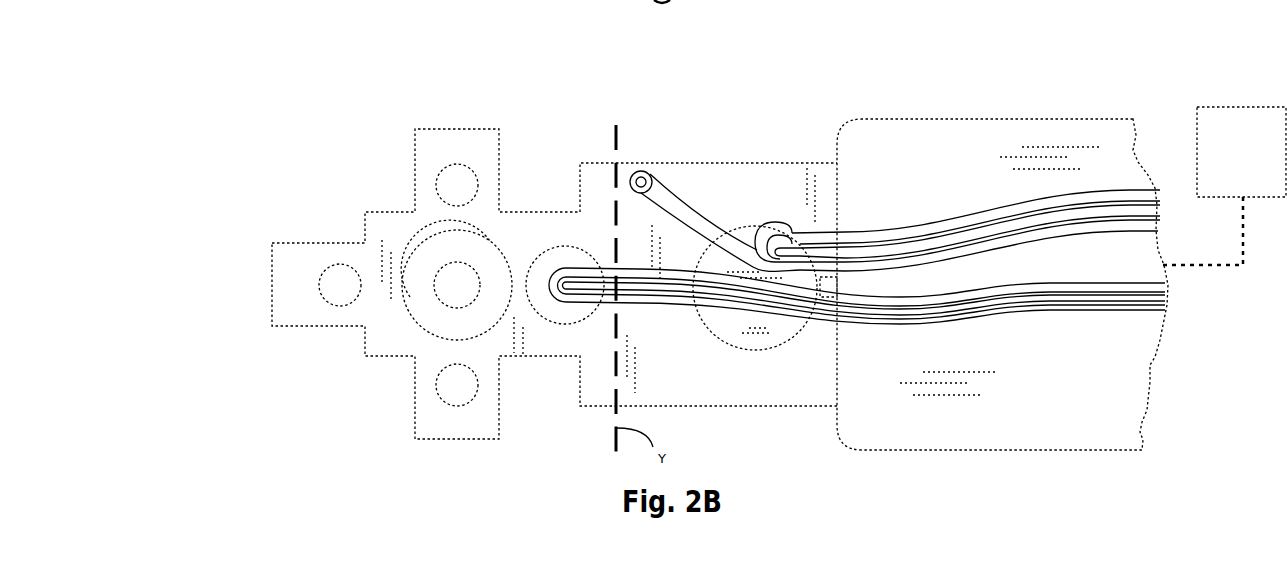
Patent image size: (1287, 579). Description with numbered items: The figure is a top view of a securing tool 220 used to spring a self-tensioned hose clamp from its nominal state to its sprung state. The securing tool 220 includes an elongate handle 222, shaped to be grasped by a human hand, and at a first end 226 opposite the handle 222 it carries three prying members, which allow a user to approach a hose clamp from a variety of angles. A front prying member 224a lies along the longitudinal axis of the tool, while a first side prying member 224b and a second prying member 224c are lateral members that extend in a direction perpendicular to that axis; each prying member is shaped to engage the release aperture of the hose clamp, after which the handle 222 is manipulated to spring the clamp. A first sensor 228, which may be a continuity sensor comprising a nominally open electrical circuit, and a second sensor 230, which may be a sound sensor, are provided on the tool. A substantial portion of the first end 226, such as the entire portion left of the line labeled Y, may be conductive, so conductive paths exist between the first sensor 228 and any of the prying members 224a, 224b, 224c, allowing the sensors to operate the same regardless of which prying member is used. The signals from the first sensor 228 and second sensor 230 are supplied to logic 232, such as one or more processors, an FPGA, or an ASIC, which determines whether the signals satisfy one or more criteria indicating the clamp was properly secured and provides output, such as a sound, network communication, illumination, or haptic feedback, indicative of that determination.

The securing tool 220 is at (326, 103).
The elongate handle 222 is at (950, 145).
The front prying member 224a is at (278, 313).
The first side prying member 224b is at (424, 147).
The second prying member 224c is at (465, 426).
The first end 226 is at (268, 216).
The first sensor 228 is at (562, 246).
The second sensor 230 is at (750, 232).
The logic 232 is at (1226, 179).